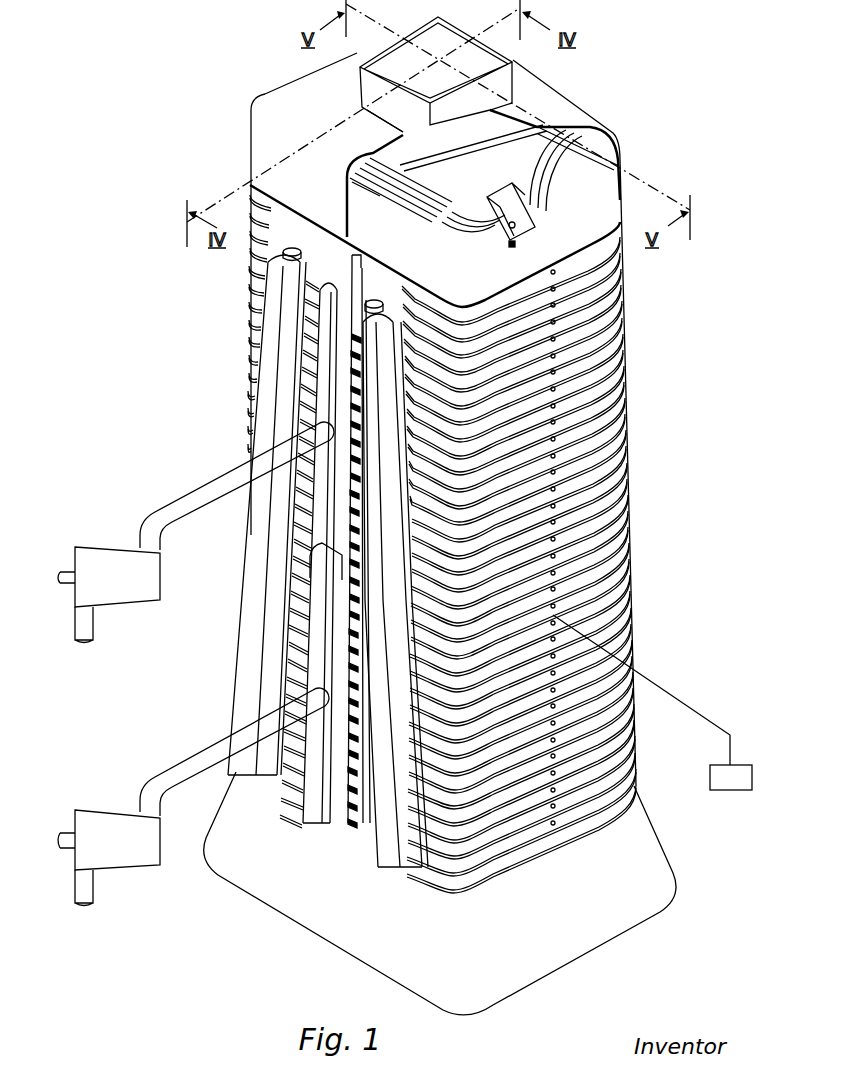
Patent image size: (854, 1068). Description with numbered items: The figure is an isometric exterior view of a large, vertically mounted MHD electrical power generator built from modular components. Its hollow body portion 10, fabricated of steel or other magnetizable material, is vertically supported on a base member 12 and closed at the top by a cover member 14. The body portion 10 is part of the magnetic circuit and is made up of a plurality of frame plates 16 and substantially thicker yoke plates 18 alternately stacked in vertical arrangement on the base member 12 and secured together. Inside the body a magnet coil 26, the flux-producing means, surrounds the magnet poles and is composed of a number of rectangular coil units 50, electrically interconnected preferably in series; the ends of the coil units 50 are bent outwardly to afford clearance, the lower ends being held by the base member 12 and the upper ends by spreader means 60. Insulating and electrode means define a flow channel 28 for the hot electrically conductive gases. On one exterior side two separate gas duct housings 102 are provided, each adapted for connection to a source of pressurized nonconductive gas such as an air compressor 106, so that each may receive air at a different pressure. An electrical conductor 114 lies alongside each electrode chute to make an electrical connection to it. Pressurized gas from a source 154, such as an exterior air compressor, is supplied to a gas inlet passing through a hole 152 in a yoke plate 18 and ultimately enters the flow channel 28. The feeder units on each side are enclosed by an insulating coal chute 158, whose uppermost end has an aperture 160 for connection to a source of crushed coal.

The body portion 10 is at (447, 455).
The base member 12 is at (590, 947).
The cover member 14 is at (256, 112).
The frame plates 16 is at (627, 505).
The yoke plates 18 is at (627, 556).
The magnet coil 26 is at (396, 246).
The flow channel 28 is at (391, 71).
The coil units 50 is at (462, 233).
The spreader means 60 is at (480, 166).
The gas duct housing 102 is at (340, 284).
The air compressor 106 is at (133, 550).
The electrical conductor 114 is at (348, 822).
The hole 152 is at (554, 268).
The source of pressurized gas 154 is at (746, 791).
The coal chute 158 is at (257, 778).
The aperture 160 is at (296, 250).